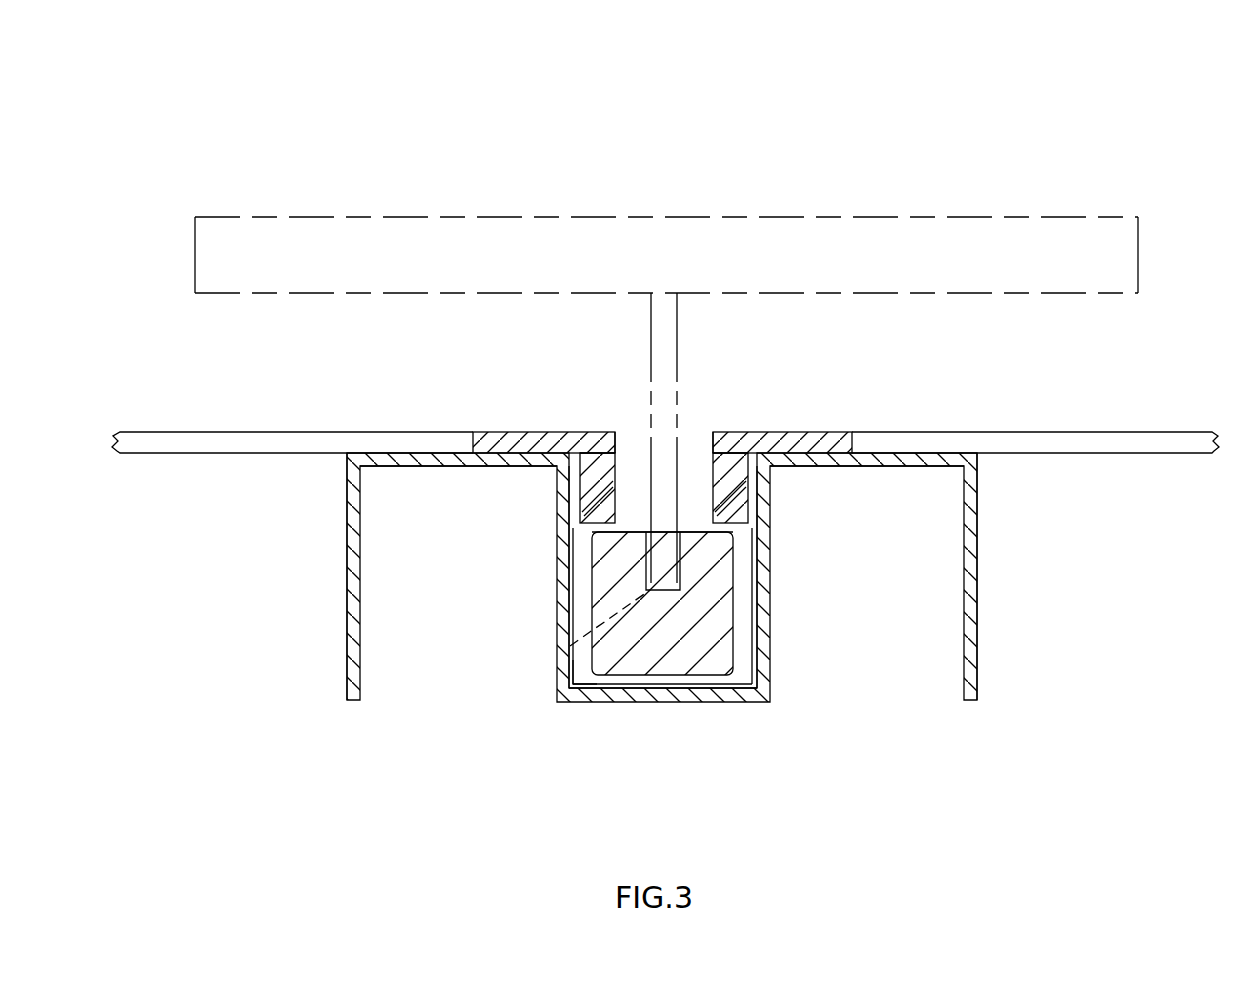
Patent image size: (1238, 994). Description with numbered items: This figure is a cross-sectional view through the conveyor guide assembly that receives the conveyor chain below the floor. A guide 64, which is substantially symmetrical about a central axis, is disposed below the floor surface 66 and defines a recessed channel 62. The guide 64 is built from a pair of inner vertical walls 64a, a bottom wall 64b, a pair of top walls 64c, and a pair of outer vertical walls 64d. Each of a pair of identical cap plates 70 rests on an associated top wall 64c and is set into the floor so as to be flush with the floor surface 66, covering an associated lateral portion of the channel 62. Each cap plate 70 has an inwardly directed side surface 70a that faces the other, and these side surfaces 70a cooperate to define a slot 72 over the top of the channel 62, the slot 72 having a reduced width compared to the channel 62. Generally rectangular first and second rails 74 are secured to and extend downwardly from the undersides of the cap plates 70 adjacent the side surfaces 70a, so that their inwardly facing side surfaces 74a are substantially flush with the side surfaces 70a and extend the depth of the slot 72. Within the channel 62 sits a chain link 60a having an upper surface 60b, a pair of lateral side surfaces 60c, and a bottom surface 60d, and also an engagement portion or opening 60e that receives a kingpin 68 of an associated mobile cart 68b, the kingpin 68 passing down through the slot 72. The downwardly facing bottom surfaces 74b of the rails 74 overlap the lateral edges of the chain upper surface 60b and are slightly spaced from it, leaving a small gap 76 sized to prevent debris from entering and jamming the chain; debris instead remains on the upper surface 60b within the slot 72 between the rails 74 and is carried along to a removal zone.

The link 60a is at (693, 655).
The upper surface 60b is at (697, 518).
The lateral side surface 60c is at (557, 690).
The bottom surface 60d is at (580, 703).
The engagement portion or opening 60e is at (554, 660).
The recessed channel 62 is at (657, 646).
The guide 64 is at (649, 648).
The inner vertical wall 64a is at (562, 598).
The bottom wall 64b is at (694, 703).
The top wall 64c is at (422, 468).
The outer vertical wall 64d is at (350, 612).
The floor surface 66 is at (172, 436).
The kingpin 68 is at (699, 292).
The mobile cart 68b is at (758, 217).
The cap plate 70 is at (505, 432).
The side surface 70a is at (612, 450).
The slot 72 is at (683, 425).
The rail 74 is at (657, 458).
The inwardly facing side surface 74a is at (618, 450).
The bottom surface 74b is at (577, 563).
The gap 76 is at (570, 630).